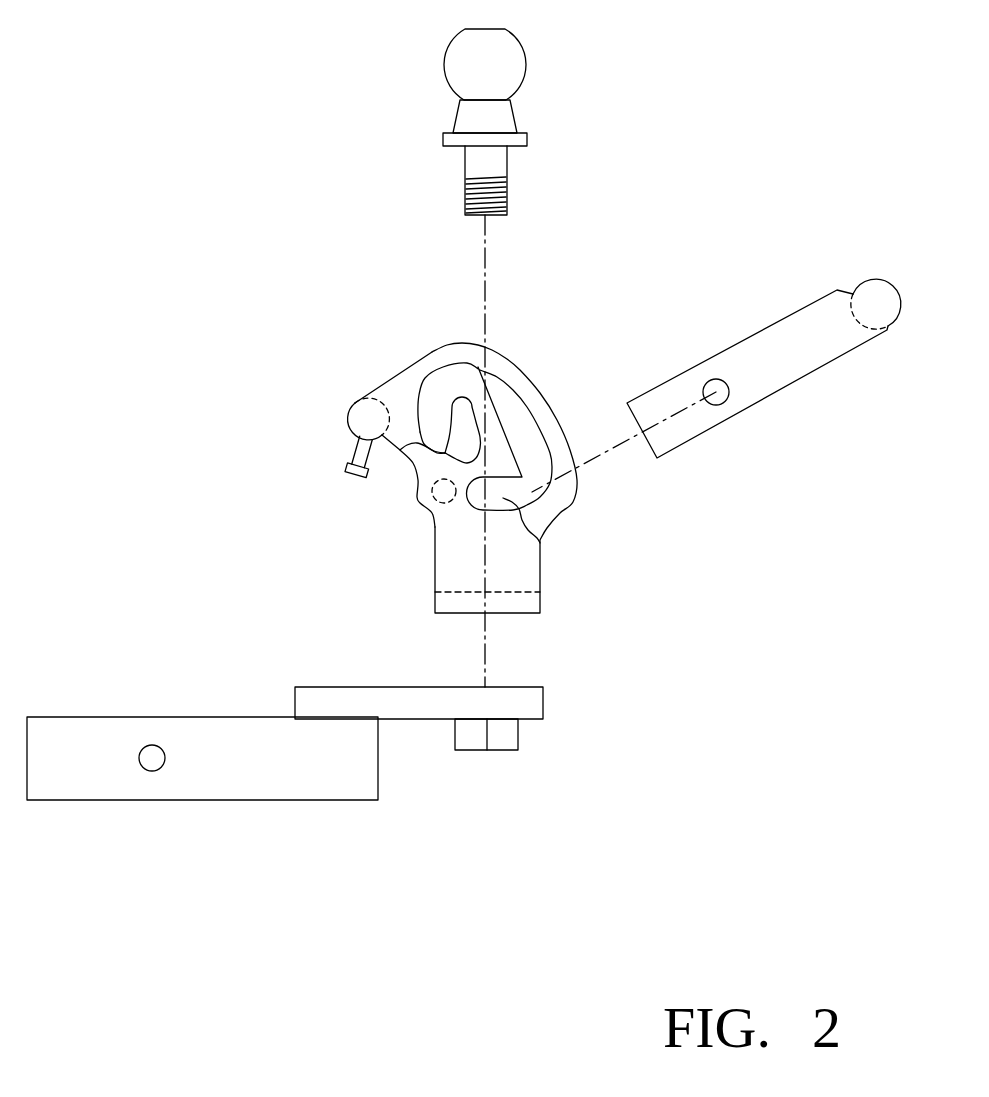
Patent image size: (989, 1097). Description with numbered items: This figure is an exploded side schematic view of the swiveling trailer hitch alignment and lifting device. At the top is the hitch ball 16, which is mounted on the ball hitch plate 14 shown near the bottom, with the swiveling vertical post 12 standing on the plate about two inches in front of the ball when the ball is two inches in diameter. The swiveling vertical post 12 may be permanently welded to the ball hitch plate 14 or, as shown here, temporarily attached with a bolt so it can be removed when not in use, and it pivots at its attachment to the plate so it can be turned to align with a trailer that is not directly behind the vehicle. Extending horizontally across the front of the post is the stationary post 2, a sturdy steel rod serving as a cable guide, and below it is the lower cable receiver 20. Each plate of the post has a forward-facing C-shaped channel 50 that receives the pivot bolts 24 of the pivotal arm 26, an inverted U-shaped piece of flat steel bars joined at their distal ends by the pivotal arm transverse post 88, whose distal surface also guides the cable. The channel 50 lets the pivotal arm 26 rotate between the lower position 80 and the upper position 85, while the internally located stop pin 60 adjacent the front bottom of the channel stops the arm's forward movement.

The hitch ball 16 is at (519, 63).
The swiveling vertical post 12 is at (534, 576).
The stationary post 2 is at (351, 409).
The lower cable receiver 20 is at (350, 455).
The C-shaped channel 50 is at (513, 420).
The upper position 85 is at (403, 449).
The stop pin 60 is at (433, 498).
The lower position 80 is at (538, 538).
The pivotal arm 26 is at (808, 407).
The pivot bolt 24 is at (720, 398).
The pivotal arm transverse post 88 is at (868, 292).
The ball hitch plate 14 is at (540, 706).